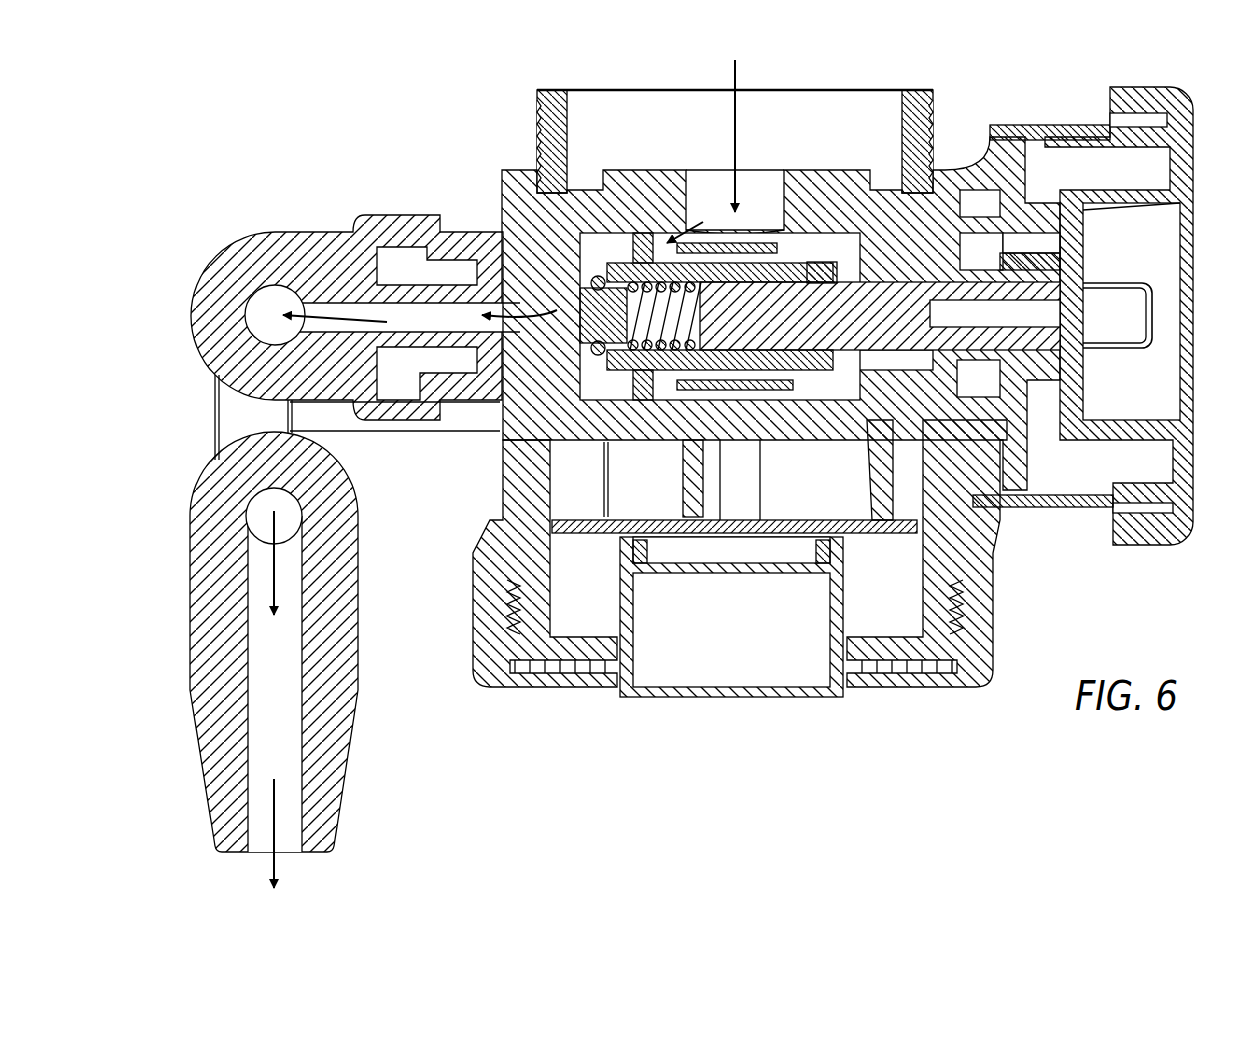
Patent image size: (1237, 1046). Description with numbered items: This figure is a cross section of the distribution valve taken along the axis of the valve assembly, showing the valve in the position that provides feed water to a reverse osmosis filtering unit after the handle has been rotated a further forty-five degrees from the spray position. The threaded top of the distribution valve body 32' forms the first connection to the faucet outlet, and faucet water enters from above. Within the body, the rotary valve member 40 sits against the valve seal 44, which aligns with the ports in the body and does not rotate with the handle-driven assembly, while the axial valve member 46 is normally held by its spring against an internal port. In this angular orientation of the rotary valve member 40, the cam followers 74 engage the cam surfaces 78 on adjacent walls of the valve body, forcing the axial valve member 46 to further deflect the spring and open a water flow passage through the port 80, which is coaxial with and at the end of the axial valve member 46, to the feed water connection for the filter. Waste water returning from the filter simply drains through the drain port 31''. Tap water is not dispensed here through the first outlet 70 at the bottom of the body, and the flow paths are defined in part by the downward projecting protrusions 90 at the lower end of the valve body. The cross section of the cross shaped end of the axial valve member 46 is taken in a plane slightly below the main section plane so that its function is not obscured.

The drain port 31'' is at (308, 660).
The top of the distribution valve body 32' is at (562, 259).
The rotary valve member 40 is at (813, 243).
The valve seal 44 is at (845, 200).
The axial valve member 46 is at (660, 242).
The first outlet 70 is at (715, 663).
The cam followers 74 is at (640, 273).
The cam surfaces 78 is at (625, 238).
The port 80 is at (592, 290).
The downward projecting protrusions 90 is at (690, 495).